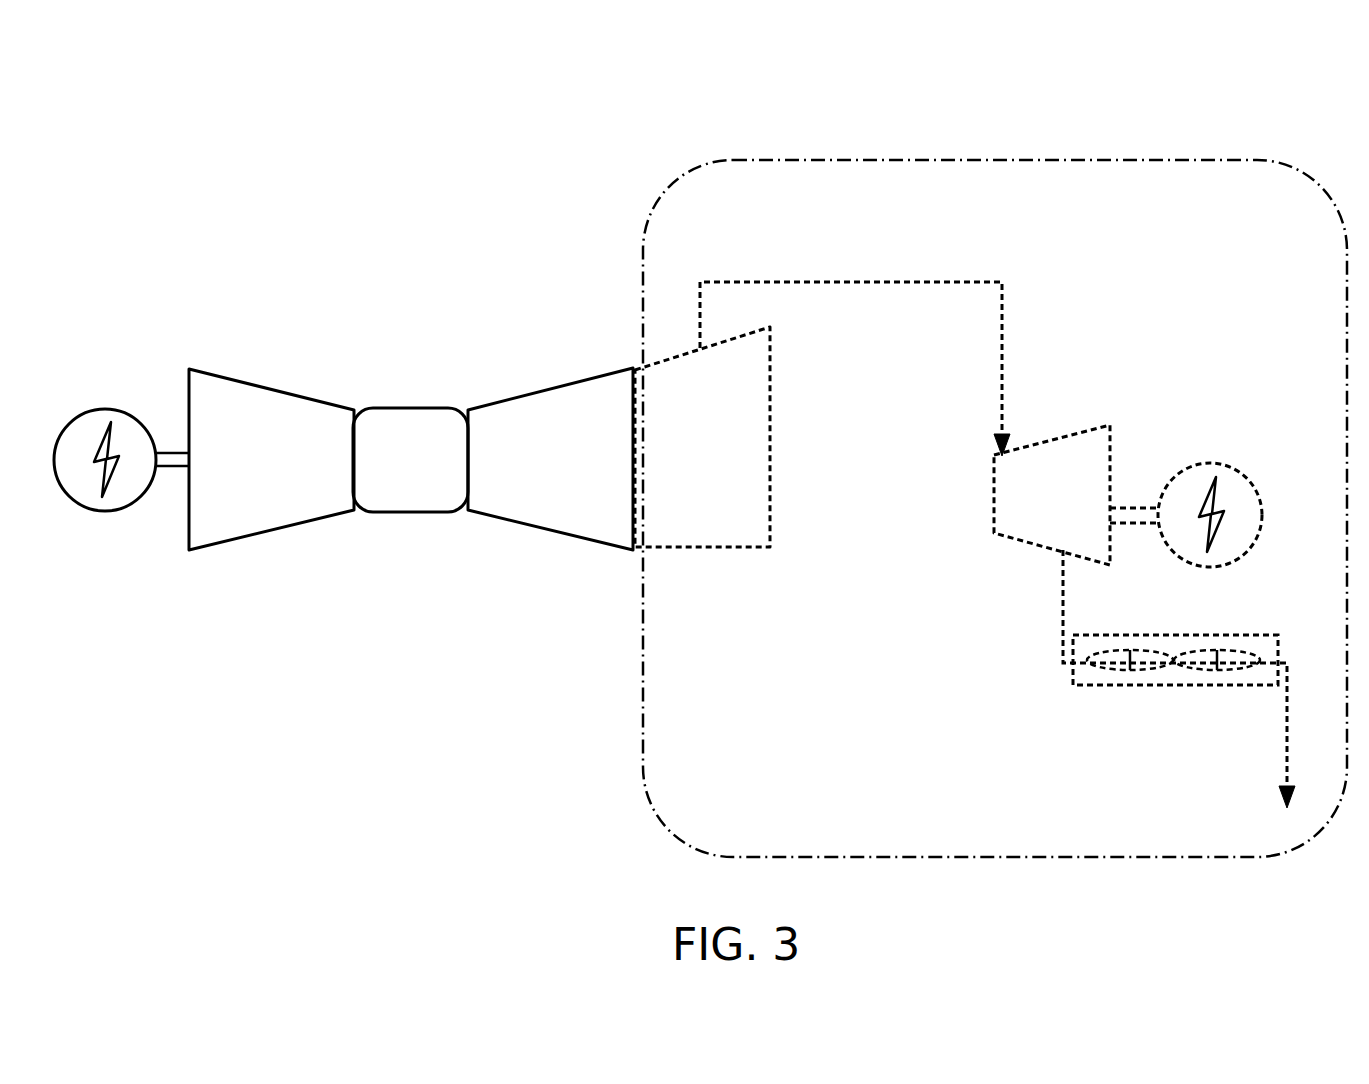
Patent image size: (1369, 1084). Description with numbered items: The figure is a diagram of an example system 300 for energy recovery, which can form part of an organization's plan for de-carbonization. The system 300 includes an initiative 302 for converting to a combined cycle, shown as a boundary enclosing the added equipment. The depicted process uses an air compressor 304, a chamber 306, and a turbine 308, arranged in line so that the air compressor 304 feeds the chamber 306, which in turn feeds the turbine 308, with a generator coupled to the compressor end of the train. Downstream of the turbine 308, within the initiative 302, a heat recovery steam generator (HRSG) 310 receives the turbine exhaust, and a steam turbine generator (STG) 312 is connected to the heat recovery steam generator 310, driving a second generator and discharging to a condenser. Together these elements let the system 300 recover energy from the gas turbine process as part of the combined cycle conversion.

The system for energy recovery 300 is at (1248, 117).
The initiative for converting to a combined cycle 302 is at (991, 508).
The air compressor 304 is at (271, 459).
The chamber 306 is at (410, 460).
The turbine 308 is at (550, 459).
The heat recovery steam generator (HRSG) 310 is at (702, 437).
The steam turbine generator (STG) 312 is at (1052, 495).